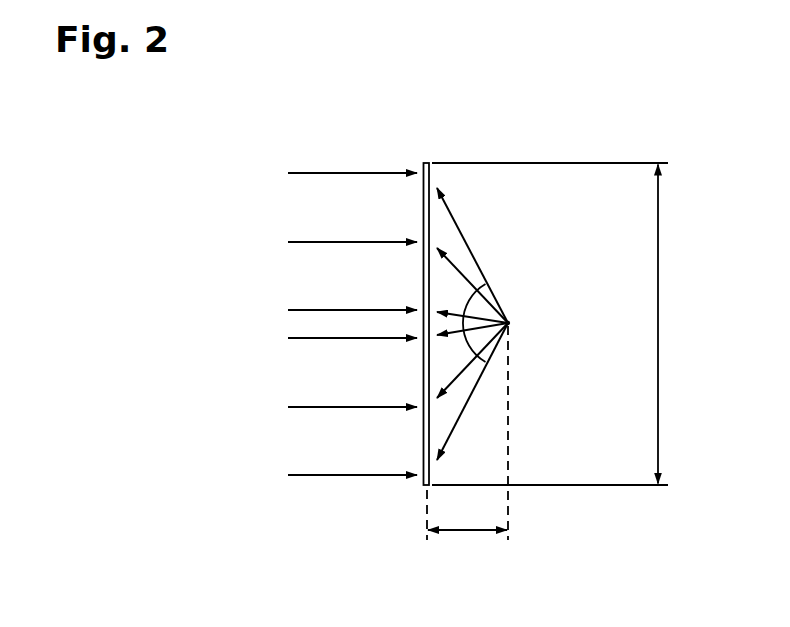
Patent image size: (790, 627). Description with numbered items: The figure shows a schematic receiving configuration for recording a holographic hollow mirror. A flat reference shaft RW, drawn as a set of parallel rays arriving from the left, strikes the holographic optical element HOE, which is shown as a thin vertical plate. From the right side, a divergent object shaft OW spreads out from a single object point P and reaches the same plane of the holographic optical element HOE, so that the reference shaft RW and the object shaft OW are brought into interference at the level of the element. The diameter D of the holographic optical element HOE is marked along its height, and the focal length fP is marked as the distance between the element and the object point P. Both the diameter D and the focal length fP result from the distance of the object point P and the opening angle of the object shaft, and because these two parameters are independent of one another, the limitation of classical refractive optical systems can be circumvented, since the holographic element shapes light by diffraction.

The flat reference shaft RW is at (347, 172).
The holographic optical element HOE is at (422, 206).
The divergent object shaft OW is at (463, 233).
The object point P is at (512, 323).
The diameter D is at (562, 324).
The focal length fP is at (467, 446).